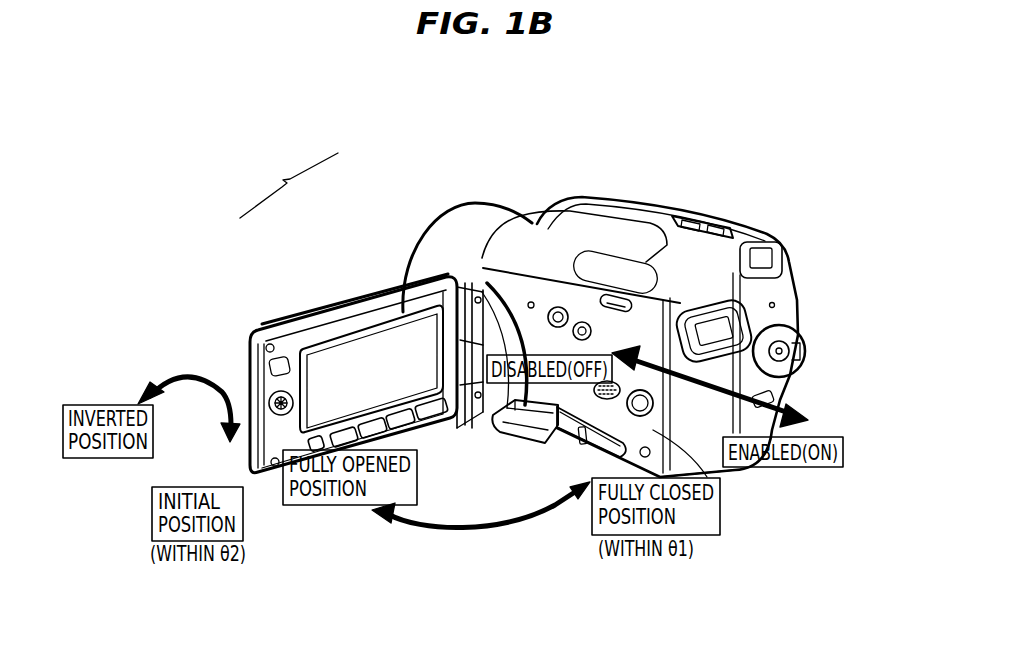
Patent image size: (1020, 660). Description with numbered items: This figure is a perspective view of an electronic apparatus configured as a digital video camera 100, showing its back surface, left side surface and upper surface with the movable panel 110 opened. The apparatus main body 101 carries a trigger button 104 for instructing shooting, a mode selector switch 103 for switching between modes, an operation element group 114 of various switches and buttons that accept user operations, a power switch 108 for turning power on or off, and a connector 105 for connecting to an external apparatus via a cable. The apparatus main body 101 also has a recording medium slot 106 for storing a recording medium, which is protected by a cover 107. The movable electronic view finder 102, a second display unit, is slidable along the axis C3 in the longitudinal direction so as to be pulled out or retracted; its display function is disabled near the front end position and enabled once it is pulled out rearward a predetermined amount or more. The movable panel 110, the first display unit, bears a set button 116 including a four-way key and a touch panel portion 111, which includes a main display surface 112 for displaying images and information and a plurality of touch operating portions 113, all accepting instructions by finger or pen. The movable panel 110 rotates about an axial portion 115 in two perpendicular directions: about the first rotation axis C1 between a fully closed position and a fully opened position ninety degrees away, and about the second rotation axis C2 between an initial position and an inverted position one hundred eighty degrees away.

The camera 100 is at (333, 92).
The apparatus main body 101 is at (713, 470).
The electronic view finder 102 is at (800, 250).
The mode selector switch 103 is at (752, 312).
The trigger button 104 is at (805, 328).
The connector 105 is at (583, 447).
The recording medium slot 106 is at (563, 445).
The cover 107 is at (513, 442).
The power switch 108 is at (616, 292).
The movable panel 110 is at (264, 325).
The touch panel portion 111 is at (289, 181).
The main display surface 112 is at (410, 335).
The touch operating portions 113 is at (427, 407).
The operation element group 114 is at (574, 320).
The axial portion 115 is at (458, 422).
The set button 116 is at (281, 416).
The first rotation axis C1 is at (469, 580).
The second rotation axis C2 is at (470, 344).
The axis C3 is at (840, 380).